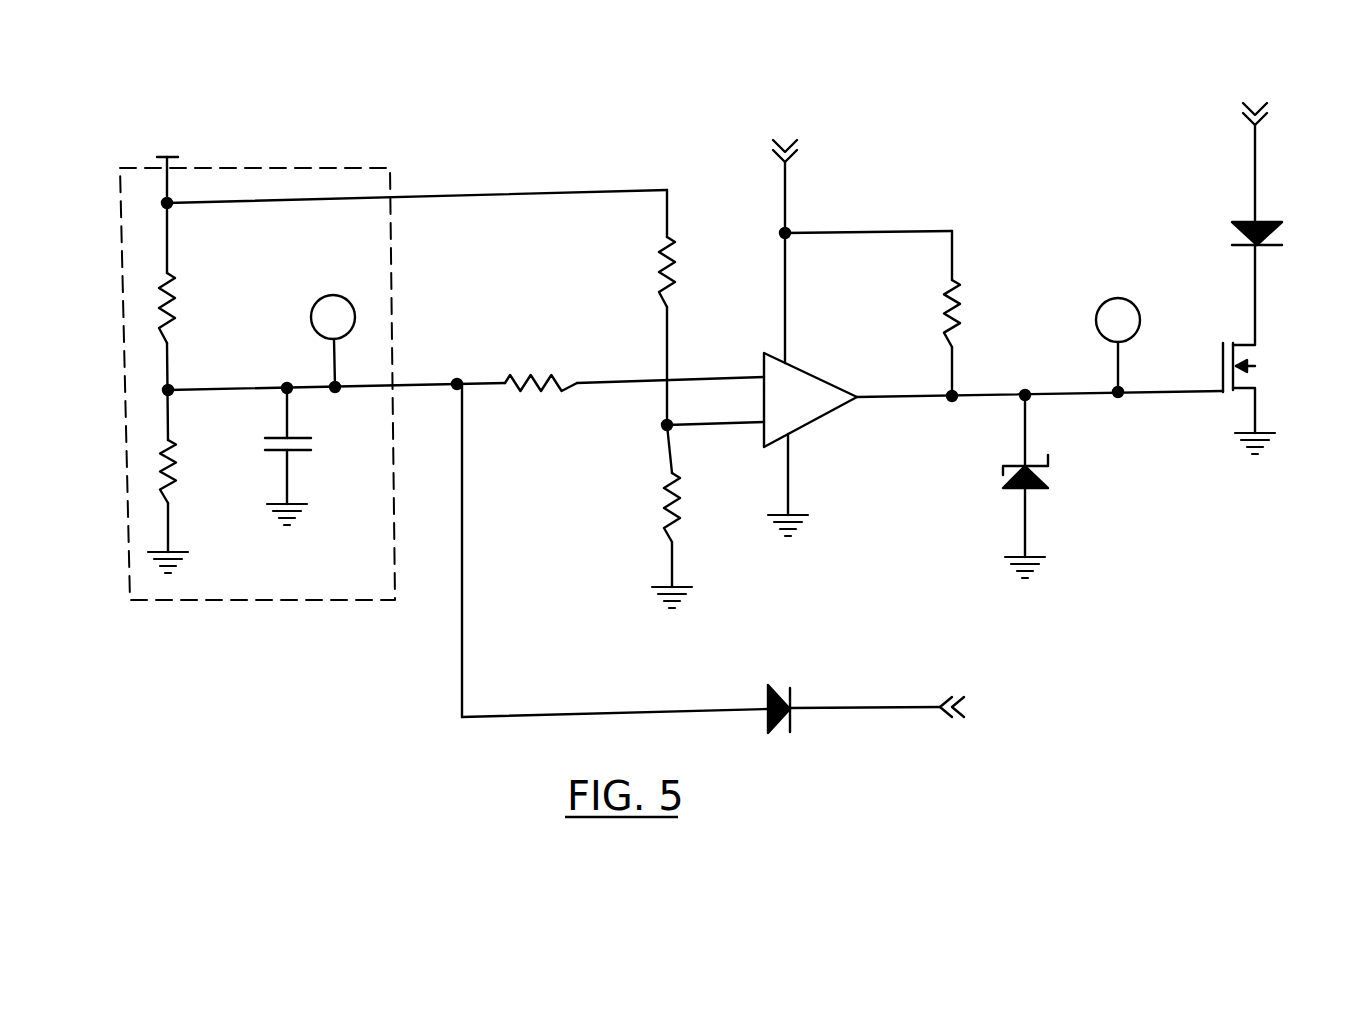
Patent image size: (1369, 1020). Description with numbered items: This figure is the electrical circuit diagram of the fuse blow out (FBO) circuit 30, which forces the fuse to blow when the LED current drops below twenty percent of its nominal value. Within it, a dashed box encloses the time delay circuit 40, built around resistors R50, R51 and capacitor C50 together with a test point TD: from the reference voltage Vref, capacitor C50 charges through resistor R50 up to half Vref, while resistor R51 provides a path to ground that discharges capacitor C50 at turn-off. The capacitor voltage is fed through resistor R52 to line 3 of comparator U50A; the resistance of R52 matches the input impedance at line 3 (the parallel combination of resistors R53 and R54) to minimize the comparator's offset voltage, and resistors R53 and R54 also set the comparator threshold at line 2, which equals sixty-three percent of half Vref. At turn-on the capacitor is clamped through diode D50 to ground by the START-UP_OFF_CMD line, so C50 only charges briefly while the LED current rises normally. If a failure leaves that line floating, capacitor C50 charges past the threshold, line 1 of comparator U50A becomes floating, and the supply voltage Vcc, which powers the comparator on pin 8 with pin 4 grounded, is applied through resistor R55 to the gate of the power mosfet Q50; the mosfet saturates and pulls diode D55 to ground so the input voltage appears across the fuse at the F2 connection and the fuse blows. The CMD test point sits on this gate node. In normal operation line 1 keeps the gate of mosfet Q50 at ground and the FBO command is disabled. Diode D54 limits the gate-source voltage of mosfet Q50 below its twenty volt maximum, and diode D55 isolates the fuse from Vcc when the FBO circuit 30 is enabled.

The fuse blow out (FBO) circuit 30 is at (922, 150).
The time delay circuit 40 is at (314, 163).
The resistor R50 is at (193, 356).
The resistor R51 is at (187, 506).
The resistor R52 is at (541, 353).
The resistor R53 is at (639, 307).
The resistor R54 is at (648, 516).
The resistor R55 is at (978, 313).
The capacitor C50 is at (319, 456).
The test point TD is at (332, 326).
The diode D50 is at (787, 676).
The diode D54 is at (1058, 486).
The diode D55 is at (1287, 186).
The power mosfet Q50 is at (1278, 349).
The comparator U50A is at (824, 430).
The command test point CMD is at (1117, 330).
The voltage Vcc is at (781, 173).
The voltage Vref is at (165, 205).
The fuse F2 connection F2 is at (1254, 102).
The line 1 of comparator U50A 1 is at (883, 383).
The line 2 of comparator U50A 2 is at (742, 411).
The line 3 of comparator U50A 3 is at (742, 366).
The ground pin 4 is at (773, 490).
The supply pin 8 is at (773, 331).